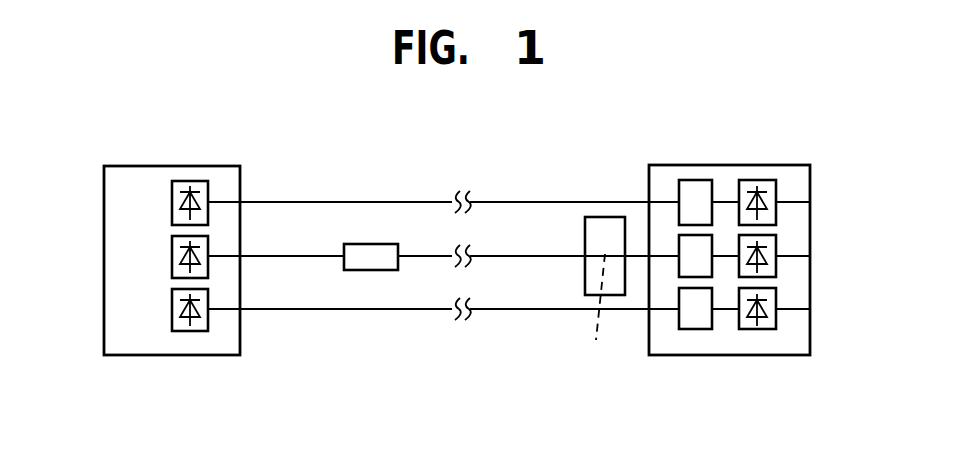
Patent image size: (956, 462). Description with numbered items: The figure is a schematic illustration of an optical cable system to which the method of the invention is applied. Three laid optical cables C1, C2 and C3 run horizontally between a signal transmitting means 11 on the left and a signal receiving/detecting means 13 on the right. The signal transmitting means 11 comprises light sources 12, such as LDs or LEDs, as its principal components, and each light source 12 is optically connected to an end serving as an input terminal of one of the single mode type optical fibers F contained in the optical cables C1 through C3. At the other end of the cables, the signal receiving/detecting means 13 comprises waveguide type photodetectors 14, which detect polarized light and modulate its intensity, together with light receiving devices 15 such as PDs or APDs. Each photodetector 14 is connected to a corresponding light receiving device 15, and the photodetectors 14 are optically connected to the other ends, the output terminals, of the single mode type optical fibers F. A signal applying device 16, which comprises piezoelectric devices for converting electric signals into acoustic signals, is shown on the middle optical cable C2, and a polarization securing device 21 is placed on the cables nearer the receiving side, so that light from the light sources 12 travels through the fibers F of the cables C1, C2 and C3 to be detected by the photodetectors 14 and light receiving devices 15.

The signal transmitting means 11 is at (131, 156).
The light sources 12 is at (172, 202).
The signal receiving/detecting means 13 is at (823, 187).
The waveguide type photodetectors 14 is at (690, 185).
The light receiving devices 15 is at (777, 207).
The signal applying device 16 is at (374, 270).
The polarization securing device 21 is at (602, 205).
The optical cable C1 is at (491, 188).
The optical cable C2 is at (291, 246).
The optical cable C3 is at (491, 322).
The single mode type optical fibers F is at (596, 313).